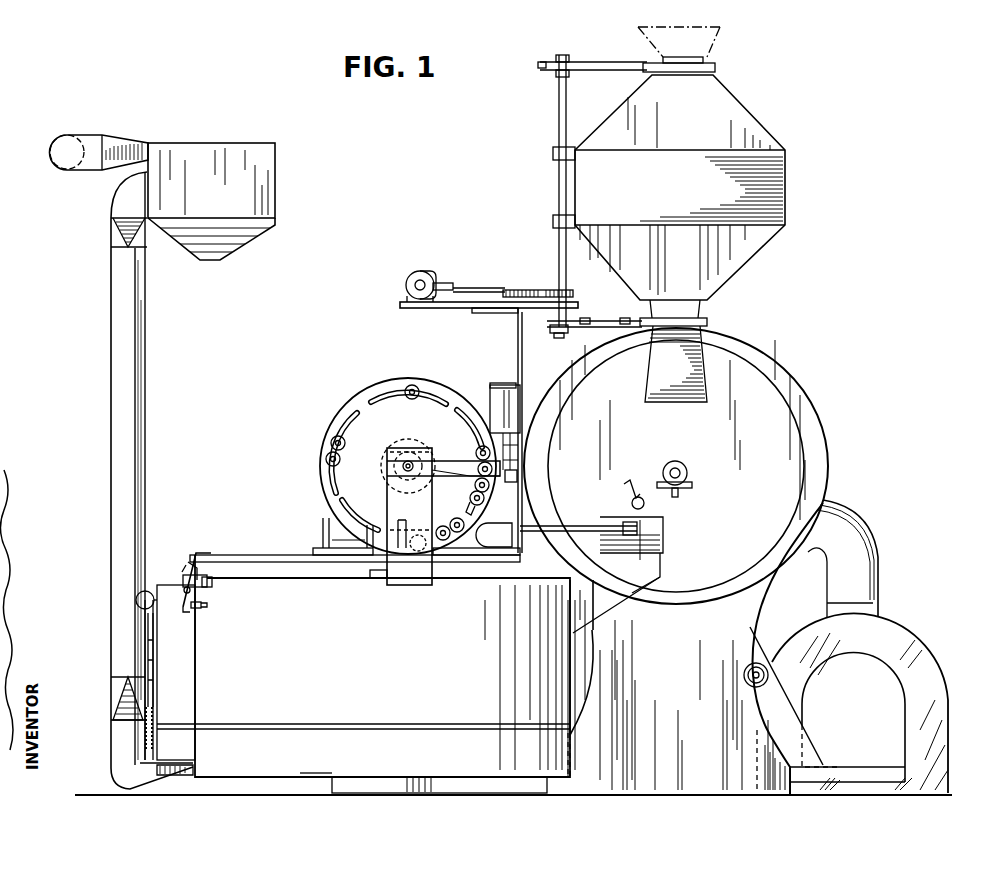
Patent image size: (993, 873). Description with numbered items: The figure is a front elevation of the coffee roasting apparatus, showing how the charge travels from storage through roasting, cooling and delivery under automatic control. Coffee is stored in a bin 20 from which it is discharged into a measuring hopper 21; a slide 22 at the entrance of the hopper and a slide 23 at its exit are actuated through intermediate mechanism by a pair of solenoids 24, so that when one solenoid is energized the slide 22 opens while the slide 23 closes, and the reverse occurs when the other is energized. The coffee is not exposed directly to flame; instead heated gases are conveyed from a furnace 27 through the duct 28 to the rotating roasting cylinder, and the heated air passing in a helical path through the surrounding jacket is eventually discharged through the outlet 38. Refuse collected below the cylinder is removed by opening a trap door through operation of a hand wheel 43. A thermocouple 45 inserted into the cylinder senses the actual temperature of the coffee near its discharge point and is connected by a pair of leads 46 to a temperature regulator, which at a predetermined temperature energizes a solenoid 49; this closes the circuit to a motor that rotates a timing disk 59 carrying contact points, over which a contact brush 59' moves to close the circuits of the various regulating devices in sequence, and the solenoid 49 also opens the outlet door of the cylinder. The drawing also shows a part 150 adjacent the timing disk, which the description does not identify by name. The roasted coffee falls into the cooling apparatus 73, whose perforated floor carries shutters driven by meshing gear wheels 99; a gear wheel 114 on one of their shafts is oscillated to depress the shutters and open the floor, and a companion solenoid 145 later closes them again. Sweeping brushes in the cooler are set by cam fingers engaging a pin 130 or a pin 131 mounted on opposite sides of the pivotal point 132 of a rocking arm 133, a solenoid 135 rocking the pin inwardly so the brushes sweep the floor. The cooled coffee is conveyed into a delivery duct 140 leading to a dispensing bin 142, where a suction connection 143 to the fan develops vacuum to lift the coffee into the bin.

The bin 20 is at (712, 46).
The measuring hopper 21 is at (752, 132).
The slide 22 is at (710, 69).
The slide 23 is at (706, 323).
The solenoids 24 is at (426, 273).
The furnace 27 is at (897, 707).
The duct 28 is at (879, 552).
The outlet 38 is at (803, 742).
The hand wheel 43 is at (745, 680).
The thermocouple 45 is at (648, 505).
The leads 46 is at (628, 482).
The solenoid 49 is at (491, 401).
The timing disk 59 is at (408, 462).
The contact brush 59' is at (464, 496).
The cooling apparatus 73 is at (382, 674).
The meshing gear wheels 99 is at (155, 718).
The gear wheel 114 is at (146, 730).
The pin 130 is at (206, 556).
The pin 131 is at (200, 610).
The pivotal point 132 is at (185, 581).
The rocking arm 133 is at (190, 563).
The solenoid 135 is at (322, 527).
The delivery duct 140 is at (146, 390).
The dispensing bin 142 is at (268, 200).
The suction connection 143 is at (82, 139).
The solenoid 145 is at (135, 602).
The crank arm housing 150 is at (450, 472).